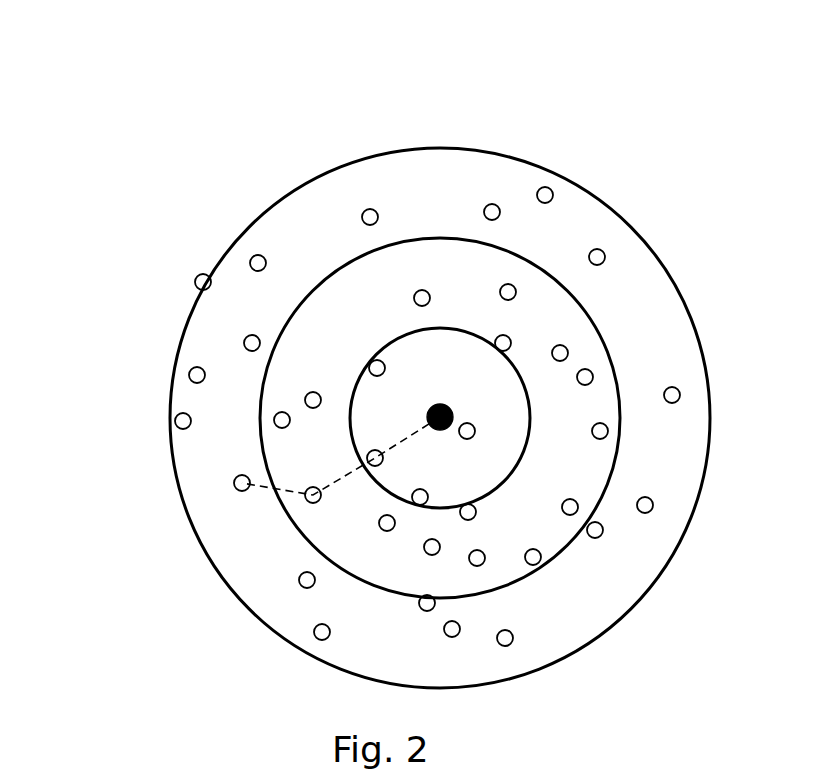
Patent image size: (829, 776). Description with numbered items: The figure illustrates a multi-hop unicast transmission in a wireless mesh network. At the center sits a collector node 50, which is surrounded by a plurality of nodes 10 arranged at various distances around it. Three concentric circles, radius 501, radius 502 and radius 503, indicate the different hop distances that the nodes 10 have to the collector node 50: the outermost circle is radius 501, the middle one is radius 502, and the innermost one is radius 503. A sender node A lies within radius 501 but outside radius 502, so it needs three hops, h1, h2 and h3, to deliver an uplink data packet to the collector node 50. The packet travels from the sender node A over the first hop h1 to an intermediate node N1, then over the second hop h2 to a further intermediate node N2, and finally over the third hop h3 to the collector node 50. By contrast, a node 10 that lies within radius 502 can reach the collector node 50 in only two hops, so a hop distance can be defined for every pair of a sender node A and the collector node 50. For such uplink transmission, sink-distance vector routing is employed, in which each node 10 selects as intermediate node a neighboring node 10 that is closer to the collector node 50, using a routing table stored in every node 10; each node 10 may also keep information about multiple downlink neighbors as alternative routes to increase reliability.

The radius 501 is at (240, 237).
The radius 502 is at (568, 290).
The radius 503 is at (400, 335).
The collector node 50 is at (440, 410).
The node 10 is at (608, 432).
The sender node A is at (235, 481).
The intermediate node N1 is at (313, 503).
The intermediate node N2 is at (375, 467).
The hop h1 is at (265, 495).
The hop h2 is at (345, 473).
The hop h3 is at (408, 447).